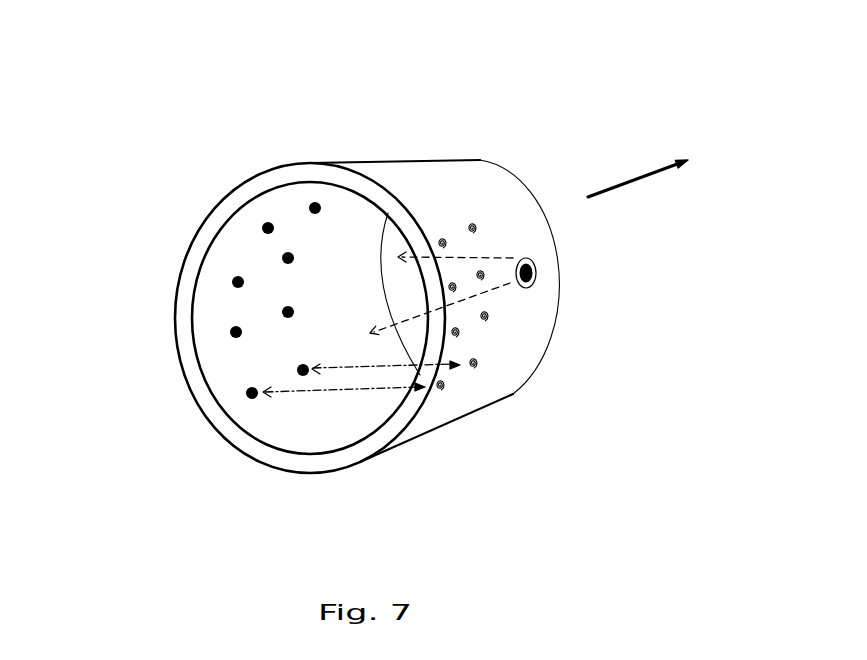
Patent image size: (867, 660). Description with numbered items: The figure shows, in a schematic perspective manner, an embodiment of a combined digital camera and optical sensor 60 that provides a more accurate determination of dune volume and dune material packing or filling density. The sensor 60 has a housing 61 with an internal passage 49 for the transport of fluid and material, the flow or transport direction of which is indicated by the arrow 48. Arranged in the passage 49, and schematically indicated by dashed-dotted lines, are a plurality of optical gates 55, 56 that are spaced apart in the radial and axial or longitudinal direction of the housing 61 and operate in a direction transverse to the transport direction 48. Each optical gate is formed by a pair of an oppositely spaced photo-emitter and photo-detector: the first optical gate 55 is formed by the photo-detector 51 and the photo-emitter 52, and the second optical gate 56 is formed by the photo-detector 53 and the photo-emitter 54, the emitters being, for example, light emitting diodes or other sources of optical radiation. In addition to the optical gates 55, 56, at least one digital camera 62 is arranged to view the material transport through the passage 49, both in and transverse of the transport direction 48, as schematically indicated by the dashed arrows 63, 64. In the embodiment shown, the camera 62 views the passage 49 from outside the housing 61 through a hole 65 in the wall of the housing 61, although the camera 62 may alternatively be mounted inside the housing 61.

The transport direction arrow 48 is at (627, 180).
The internal passage 49 is at (256, 428).
The photo-detector 51 is at (480, 367).
The photo-emitter 52 is at (300, 369).
The photo-detector 53 is at (447, 388).
The photo-emitter 54 is at (248, 394).
The optical gate 55 is at (342, 363).
The optical gate 56 is at (322, 388).
The optical sensor 60 is at (537, 70).
The housing 61 is at (457, 162).
The digital camera 62 is at (534, 277).
The dashed arrow 63 is at (490, 293).
The dashed arrow 64 is at (477, 258).
The hole 65 is at (529, 259).